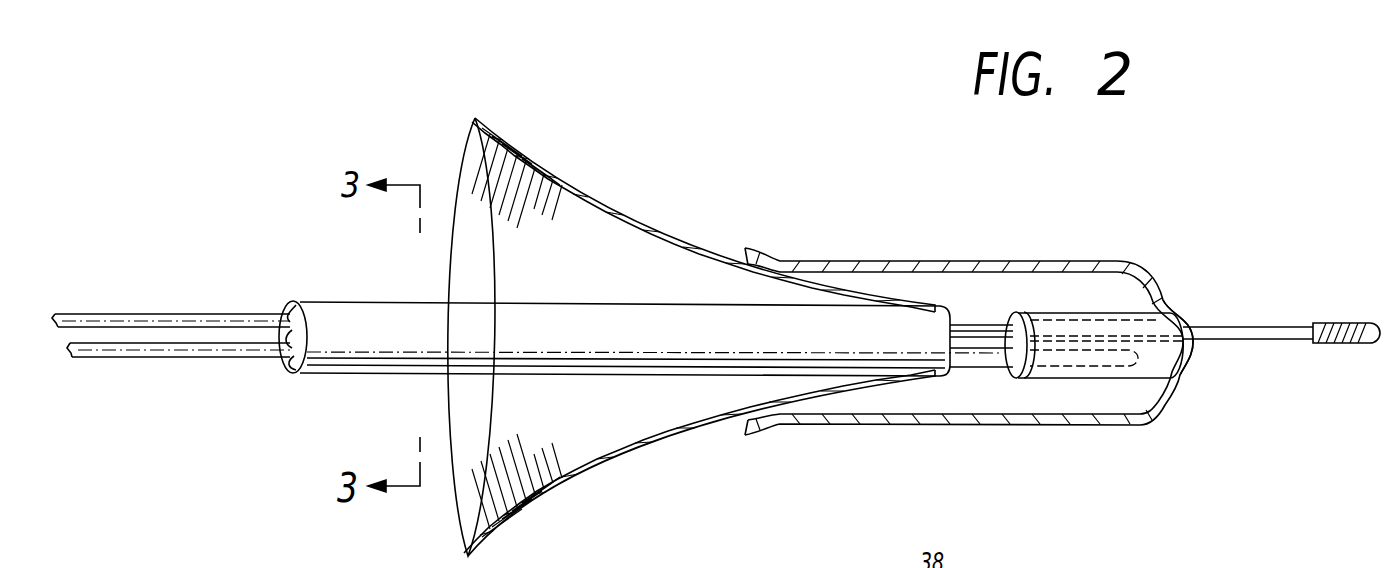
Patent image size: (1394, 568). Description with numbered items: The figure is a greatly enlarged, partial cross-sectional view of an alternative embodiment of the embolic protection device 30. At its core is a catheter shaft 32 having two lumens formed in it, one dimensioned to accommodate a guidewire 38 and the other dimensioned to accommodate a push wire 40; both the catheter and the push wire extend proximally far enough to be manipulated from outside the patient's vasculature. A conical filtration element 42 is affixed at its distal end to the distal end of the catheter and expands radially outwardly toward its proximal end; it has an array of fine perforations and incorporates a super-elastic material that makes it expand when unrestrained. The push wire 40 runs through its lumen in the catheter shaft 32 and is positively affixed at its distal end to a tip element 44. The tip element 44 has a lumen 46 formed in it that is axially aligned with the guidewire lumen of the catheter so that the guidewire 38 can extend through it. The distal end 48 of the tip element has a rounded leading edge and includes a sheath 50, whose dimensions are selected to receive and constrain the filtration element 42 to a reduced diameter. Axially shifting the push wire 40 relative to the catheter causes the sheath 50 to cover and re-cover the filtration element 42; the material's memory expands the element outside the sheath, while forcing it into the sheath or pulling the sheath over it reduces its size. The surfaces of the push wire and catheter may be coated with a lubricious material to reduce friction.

The embolic protection device 30 is at (302, 208).
The catheter shaft 32 is at (340, 302).
The guidewire 38 is at (143, 313).
The push wire 40 is at (200, 353).
The conical filtration element 42 is at (503, 183).
The tip element 44 is at (1097, 317).
The lumen 46 is at (1008, 316).
The distal end 48 is at (1152, 292).
The sheath 50 is at (940, 262).